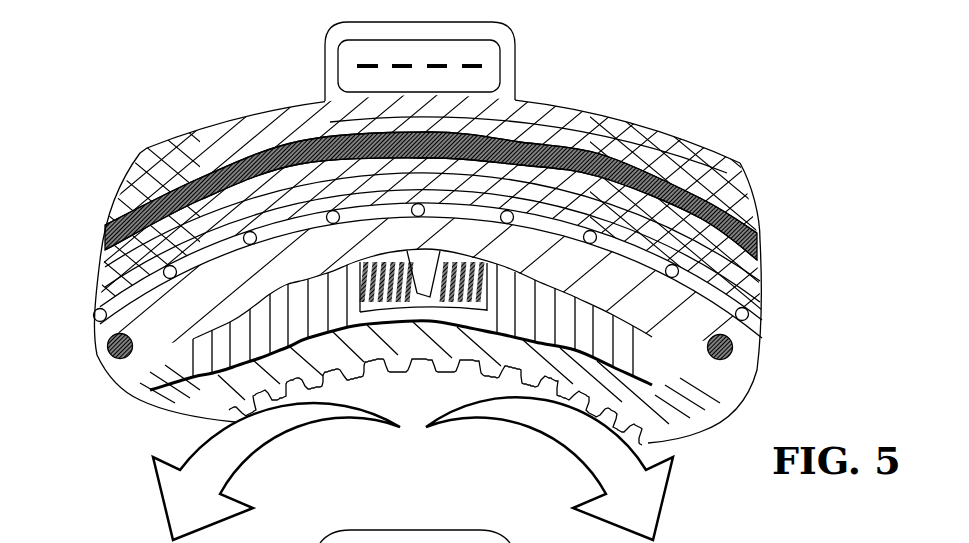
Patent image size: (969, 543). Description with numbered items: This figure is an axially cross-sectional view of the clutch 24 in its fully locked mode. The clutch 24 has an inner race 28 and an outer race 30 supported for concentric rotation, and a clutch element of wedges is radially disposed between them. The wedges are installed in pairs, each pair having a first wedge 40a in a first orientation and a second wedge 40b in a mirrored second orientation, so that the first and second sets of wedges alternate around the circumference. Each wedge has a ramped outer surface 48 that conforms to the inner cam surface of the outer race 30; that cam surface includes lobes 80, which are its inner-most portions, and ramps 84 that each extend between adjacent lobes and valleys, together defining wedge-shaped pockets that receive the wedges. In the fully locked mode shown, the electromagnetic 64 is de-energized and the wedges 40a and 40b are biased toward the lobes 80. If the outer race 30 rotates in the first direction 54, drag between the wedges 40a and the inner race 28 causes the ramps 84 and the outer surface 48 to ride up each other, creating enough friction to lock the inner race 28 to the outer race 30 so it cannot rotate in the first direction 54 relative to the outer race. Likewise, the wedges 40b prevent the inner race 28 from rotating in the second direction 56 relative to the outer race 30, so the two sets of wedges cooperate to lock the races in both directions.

The clutch 24 is at (659, 98).
The inner race 28 is at (375, 358).
The outer race 30 is at (686, 192).
The first wedge 40a is at (240, 340).
The second wedge 40b is at (600, 358).
The outer surface 48 is at (242, 305).
The first direction 54 is at (207, 514).
The second direction 56 is at (645, 514).
The electromagnetic 64 is at (528, 140).
The lobes 80 is at (697, 378).
The ramps 84 is at (283, 284).